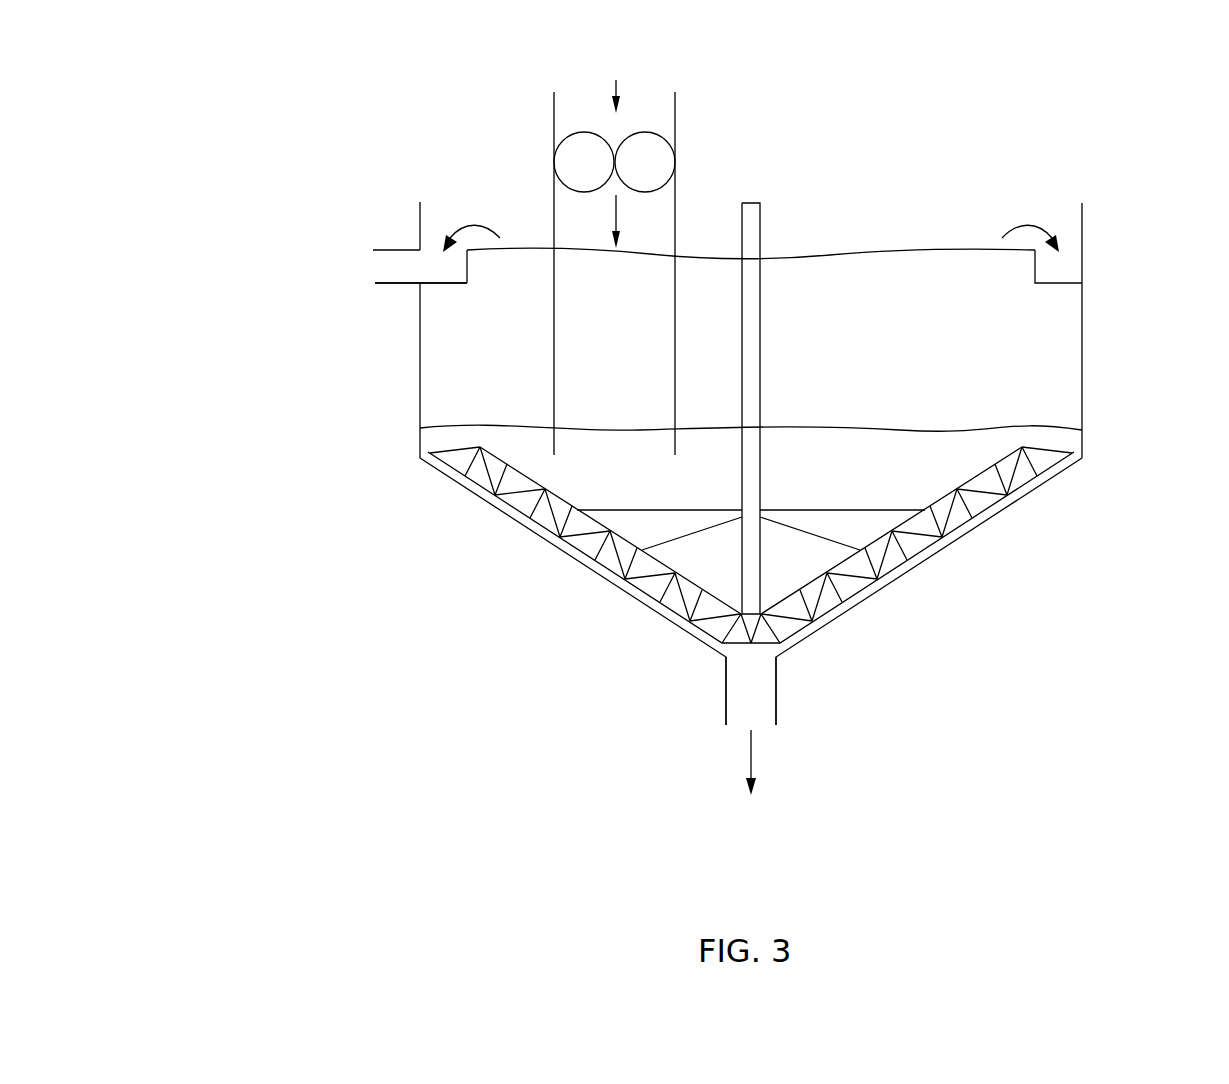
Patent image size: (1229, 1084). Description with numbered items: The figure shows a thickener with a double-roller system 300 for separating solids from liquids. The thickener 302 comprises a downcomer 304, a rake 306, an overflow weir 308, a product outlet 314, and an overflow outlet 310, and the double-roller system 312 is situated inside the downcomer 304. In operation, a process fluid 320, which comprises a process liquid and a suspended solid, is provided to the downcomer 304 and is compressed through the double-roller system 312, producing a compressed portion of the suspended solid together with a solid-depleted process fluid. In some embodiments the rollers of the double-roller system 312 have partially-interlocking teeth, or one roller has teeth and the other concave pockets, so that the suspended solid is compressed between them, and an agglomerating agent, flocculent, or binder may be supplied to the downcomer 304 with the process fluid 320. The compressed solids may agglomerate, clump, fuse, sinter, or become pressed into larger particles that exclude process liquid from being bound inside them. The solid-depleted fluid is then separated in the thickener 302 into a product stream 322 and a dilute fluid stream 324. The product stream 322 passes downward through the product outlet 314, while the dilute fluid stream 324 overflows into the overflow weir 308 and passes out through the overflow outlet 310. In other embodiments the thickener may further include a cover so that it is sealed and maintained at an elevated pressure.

The thickener with a double-roller system 300 is at (212, 98).
The thickener 302 is at (1082, 408).
The downcomer 304 is at (677, 210).
The rake 306 is at (845, 600).
The overflow weir 308 is at (1068, 268).
The overflow outlet 310 is at (402, 248).
The double-roller system 312 is at (673, 158).
The product outlet 314 is at (726, 690).
The process fluid 320 is at (613, 148).
The product stream 322 is at (433, 442).
The dilute fluid stream 324 is at (397, 264).